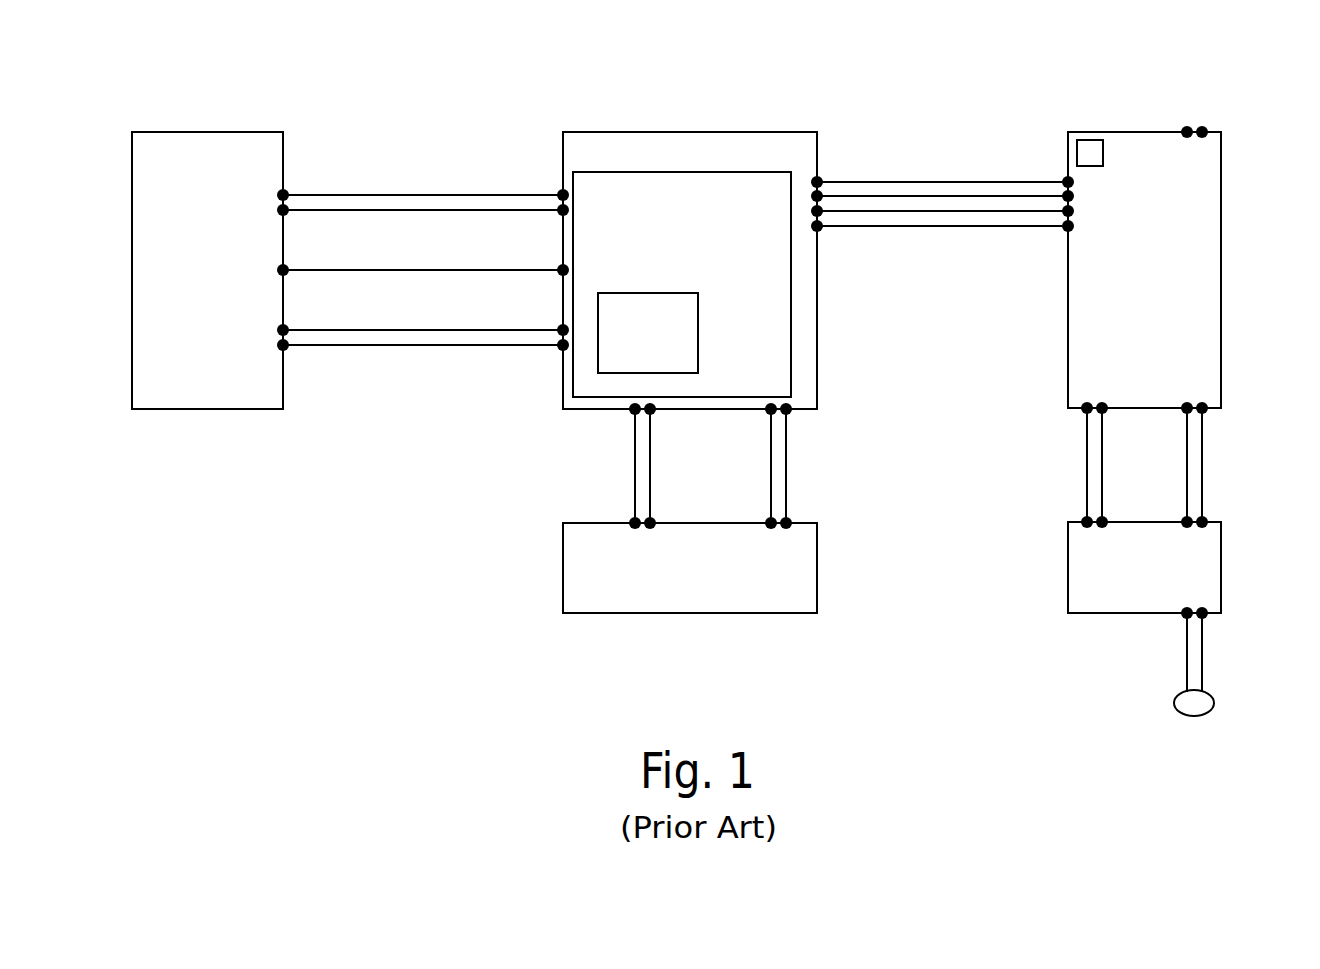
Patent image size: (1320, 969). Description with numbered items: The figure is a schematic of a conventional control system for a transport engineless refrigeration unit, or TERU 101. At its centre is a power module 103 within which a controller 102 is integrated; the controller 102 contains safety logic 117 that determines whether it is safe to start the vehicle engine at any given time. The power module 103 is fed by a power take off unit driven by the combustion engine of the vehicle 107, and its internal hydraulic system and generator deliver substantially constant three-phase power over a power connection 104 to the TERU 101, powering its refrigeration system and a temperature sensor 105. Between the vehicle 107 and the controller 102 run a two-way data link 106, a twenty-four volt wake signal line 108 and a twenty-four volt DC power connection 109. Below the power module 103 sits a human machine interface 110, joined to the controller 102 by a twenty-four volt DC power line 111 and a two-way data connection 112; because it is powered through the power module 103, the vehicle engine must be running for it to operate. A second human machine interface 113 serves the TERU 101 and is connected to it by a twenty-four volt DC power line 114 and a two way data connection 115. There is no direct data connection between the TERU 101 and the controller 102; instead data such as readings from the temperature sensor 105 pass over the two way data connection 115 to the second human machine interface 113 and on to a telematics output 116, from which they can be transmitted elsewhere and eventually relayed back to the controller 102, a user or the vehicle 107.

The TERU 101 is at (1222, 245).
The controller 102 is at (604, 170).
The power module 103 is at (792, 131).
The power connection 104 is at (906, 182).
The temperature sensor 105 is at (1090, 138).
The two-way data link 106 is at (423, 195).
The vehicle 107 is at (232, 132).
The 24V wake signal line 108 is at (423, 270).
The 24V DC power connection 109 is at (423, 330).
The human machine interface 110 is at (740, 613).
The 24V DC power line 111 is at (650, 465).
The two-way data connection 112 is at (787, 465).
The second human machine interface 113 is at (1222, 589).
The 24V DC power line 114 is at (1087, 488).
The two way data connection 115 is at (1202, 472).
The telematics output 116 is at (1178, 710).
The safety logic 117 is at (683, 291).